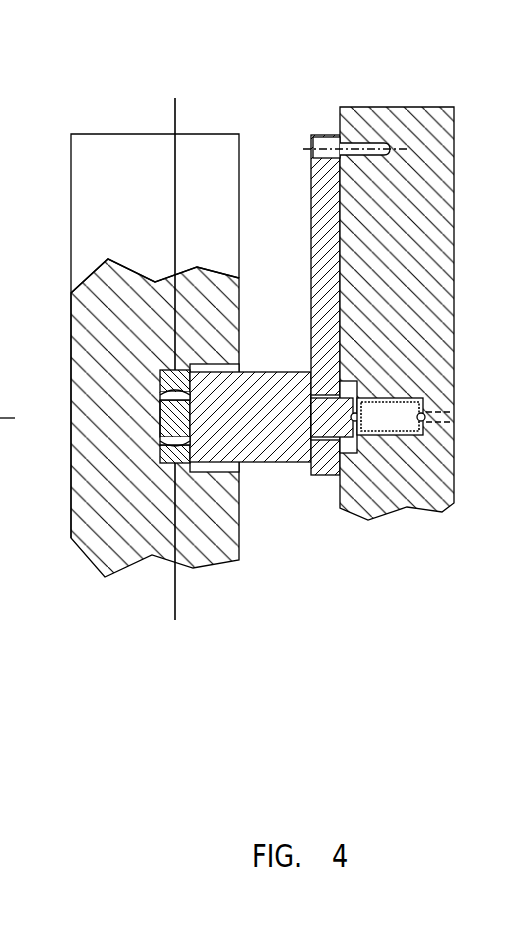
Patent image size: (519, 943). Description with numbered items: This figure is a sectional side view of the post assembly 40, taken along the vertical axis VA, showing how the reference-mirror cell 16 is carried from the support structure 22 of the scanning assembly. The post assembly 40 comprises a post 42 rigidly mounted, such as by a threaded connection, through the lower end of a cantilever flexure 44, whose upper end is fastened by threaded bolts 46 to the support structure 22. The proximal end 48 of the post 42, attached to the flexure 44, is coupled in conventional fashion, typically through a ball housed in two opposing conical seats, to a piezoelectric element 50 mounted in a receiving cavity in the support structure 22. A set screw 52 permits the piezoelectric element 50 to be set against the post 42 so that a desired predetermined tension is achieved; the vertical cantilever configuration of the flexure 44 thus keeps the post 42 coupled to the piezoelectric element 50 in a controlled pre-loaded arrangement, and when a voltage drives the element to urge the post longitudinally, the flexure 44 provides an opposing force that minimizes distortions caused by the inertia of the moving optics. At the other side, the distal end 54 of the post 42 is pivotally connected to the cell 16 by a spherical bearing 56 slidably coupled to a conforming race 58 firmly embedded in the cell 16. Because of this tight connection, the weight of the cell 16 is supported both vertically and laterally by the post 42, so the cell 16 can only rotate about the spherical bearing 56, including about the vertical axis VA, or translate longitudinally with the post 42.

The reference-mirror cell 16 is at (137, 147).
The vertical axis VA is at (177, 113).
The support structure 22 is at (428, 113).
The post assembly 40 is at (171, 464).
The post 42 is at (272, 373).
The cantilever flexure 44 is at (310, 233).
The threaded bolts 46 is at (312, 146).
The proximal end 48 is at (356, 422).
The piezoelectric element 50 is at (398, 420).
The set screw 52 is at (450, 413).
The distal end 54 is at (170, 408).
The spherical bearing 56 is at (167, 402).
The conforming race 58 is at (175, 398).